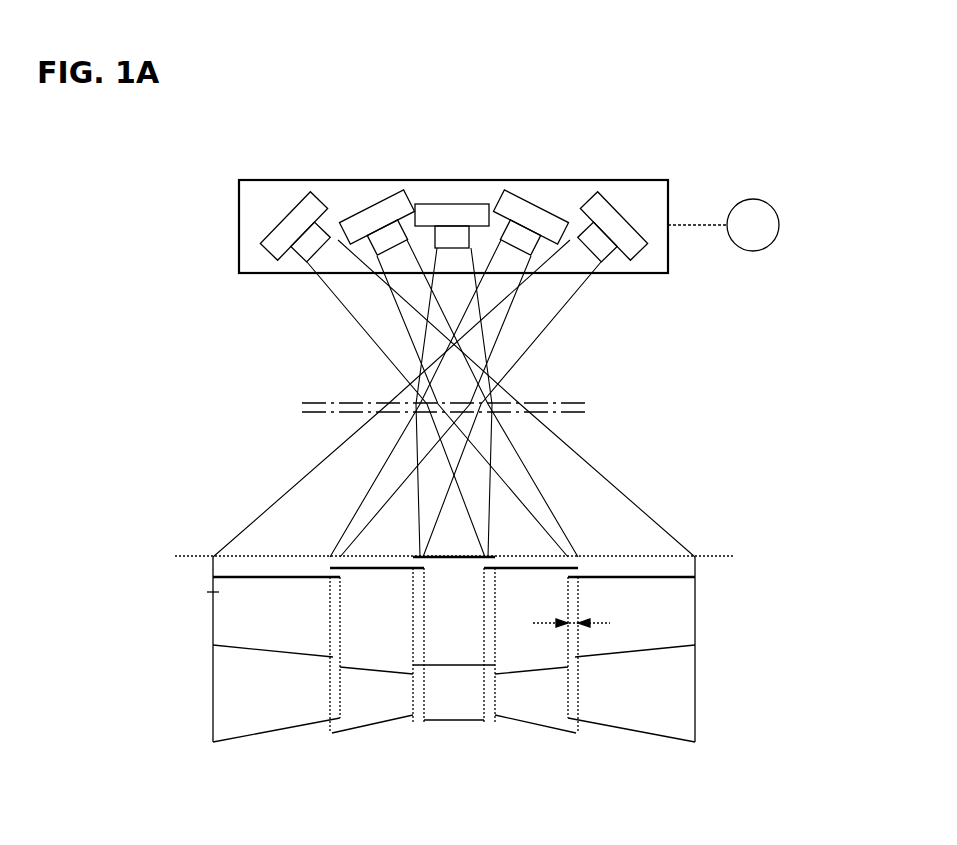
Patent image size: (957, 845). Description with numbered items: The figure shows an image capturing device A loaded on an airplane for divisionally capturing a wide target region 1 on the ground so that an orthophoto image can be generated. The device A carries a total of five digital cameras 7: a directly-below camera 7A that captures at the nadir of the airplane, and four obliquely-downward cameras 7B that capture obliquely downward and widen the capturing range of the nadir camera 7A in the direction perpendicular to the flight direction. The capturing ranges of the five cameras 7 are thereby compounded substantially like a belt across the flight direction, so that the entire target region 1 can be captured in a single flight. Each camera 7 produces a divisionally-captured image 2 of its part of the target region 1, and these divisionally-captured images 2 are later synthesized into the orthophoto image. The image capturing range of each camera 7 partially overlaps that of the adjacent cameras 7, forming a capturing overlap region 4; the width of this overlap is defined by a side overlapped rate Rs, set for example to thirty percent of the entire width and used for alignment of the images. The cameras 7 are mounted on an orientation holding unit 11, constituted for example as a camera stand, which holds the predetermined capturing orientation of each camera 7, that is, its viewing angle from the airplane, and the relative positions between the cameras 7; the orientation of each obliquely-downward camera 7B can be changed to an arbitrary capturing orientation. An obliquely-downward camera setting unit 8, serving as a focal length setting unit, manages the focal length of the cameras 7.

The target region 1 is at (657, 555).
The divisionally-captured image 2 is at (227, 668).
The capturing overlap region 4 is at (327, 715).
The digital camera 7 is at (474, 193).
The directly-below camera 7A is at (455, 214).
The obliquely-downward camera 7B is at (290, 220).
The obliquely-downward camera setting unit 8 is at (758, 210).
The orientation holding unit 11 is at (662, 262).
The image capturing device A is at (220, 238).
The side overlapped rate Rs is at (572, 617).